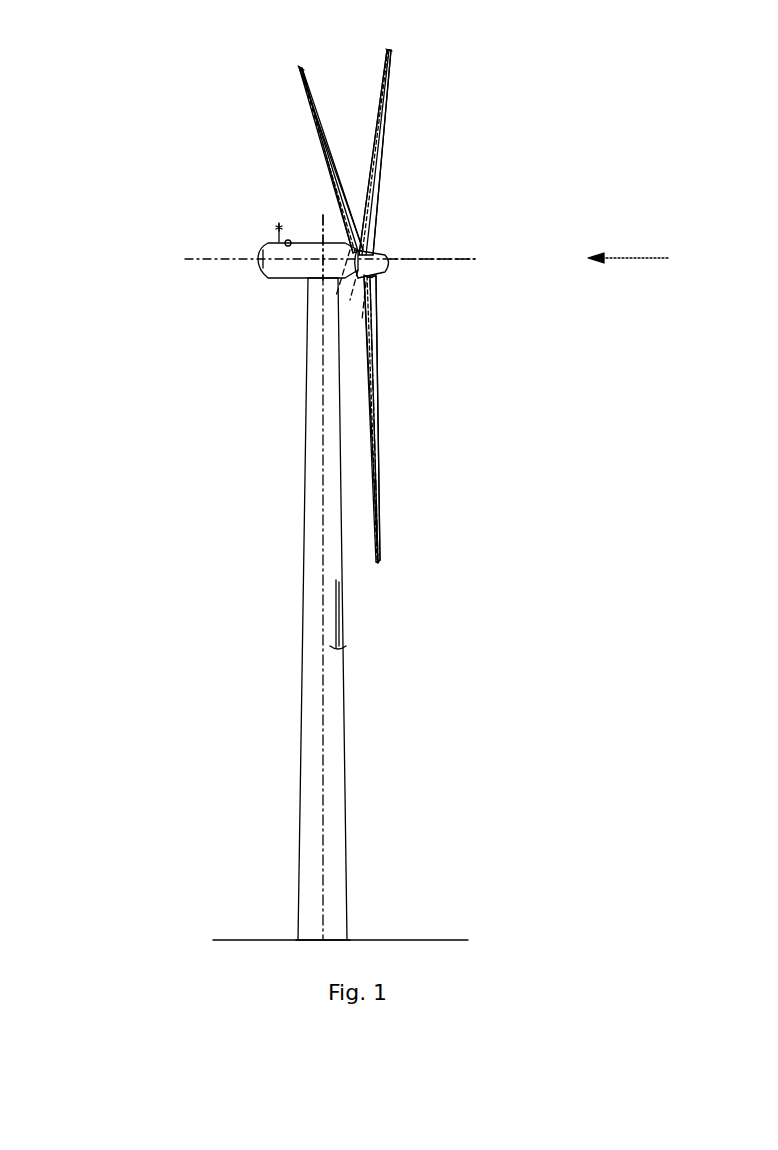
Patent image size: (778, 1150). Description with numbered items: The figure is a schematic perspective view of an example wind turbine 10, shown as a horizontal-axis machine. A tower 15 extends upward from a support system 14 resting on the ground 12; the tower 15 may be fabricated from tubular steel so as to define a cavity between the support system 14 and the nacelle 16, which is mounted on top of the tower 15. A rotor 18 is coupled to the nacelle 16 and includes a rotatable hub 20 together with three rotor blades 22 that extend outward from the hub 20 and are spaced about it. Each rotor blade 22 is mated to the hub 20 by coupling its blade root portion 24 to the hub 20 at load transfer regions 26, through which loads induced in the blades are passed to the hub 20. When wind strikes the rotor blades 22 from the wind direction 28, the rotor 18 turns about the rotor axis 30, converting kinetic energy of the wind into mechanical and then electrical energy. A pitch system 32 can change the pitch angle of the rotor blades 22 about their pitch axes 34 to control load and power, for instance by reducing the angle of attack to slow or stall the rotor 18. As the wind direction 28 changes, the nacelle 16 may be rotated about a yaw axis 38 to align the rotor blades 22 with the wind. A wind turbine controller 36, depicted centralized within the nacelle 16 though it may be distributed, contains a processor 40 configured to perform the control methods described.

The wind turbine 10 is at (118, 80).
The ground 12 is at (233, 938).
The support system 14 is at (290, 938).
The tower 15 is at (303, 584).
The nacelle 16 is at (283, 279).
The rotor 18 is at (393, 176).
The rotatable hub 20 is at (385, 255).
The rotor blade 22 is at (318, 128).
The blade root portion 24 is at (378, 352).
The load transfer regions 26 is at (375, 278).
The wind direction 28 is at (641, 258).
The rotor axis 30 is at (440, 260).
The pitch system 32 is at (375, 293).
The pitch axes 34 is at (300, 70).
The wind turbine controller 36 is at (332, 296).
The yaw axis 38 is at (340, 646).
The processor 40 is at (336, 234).